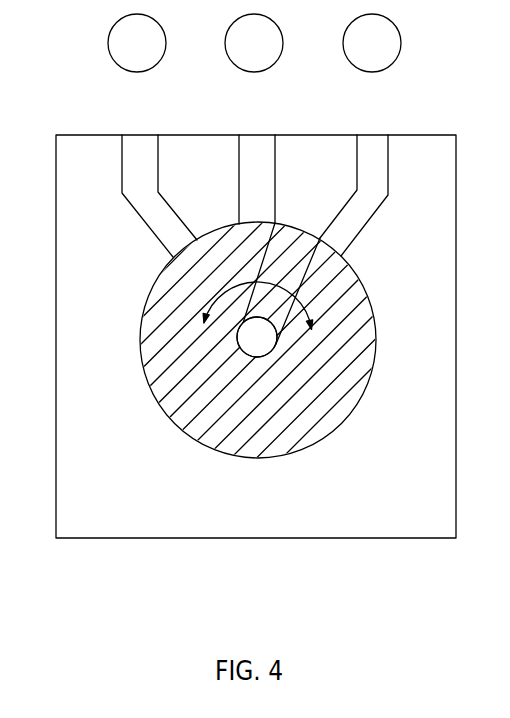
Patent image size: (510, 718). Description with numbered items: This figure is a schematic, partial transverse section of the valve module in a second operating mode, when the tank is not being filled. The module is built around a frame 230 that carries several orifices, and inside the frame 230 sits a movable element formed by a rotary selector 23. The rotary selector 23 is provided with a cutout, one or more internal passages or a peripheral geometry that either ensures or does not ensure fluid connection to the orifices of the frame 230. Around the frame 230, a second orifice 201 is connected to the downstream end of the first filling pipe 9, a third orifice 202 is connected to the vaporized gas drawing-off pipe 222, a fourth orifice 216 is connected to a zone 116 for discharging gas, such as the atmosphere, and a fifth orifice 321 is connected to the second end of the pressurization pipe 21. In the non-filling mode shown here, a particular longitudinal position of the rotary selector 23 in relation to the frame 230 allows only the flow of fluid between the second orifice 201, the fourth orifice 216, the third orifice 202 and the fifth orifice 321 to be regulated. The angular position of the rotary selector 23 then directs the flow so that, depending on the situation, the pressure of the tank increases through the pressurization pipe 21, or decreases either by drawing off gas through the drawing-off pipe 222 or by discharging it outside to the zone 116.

The frame 230 is at (115, 503).
The rotary selector 23 is at (335, 405).
The pressurization pipe 21 is at (258, 358).
The fifth orifice 321 is at (289, 464).
The fourth orifice 216 is at (152, 130).
The third orifice 202 is at (273, 128).
The second orifice 201 is at (388, 128).
The zone for discharging gas 116 is at (137, 135).
The vaporized gas drawing-off pipe 222 is at (254, 135).
The first filling pipe 9 is at (372, 135).